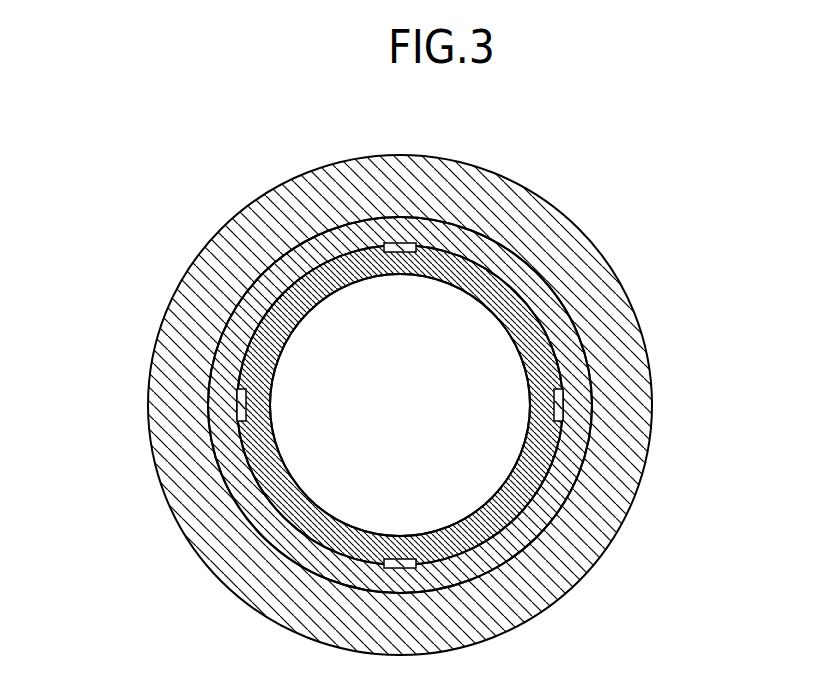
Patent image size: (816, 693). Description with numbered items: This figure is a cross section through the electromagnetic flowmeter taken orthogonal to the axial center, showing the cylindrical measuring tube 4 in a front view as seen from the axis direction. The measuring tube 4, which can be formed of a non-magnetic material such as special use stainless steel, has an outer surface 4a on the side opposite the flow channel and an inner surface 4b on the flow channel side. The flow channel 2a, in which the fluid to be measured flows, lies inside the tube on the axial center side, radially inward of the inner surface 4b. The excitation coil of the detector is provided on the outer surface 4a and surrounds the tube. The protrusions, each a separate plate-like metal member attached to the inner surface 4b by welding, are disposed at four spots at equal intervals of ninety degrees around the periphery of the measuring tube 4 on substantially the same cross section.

The measuring tube 4 is at (458, 401).
The outer surface 4a is at (525, 258).
The inner surface 4b is at (542, 326).
The flow channel 2a is at (350, 482).